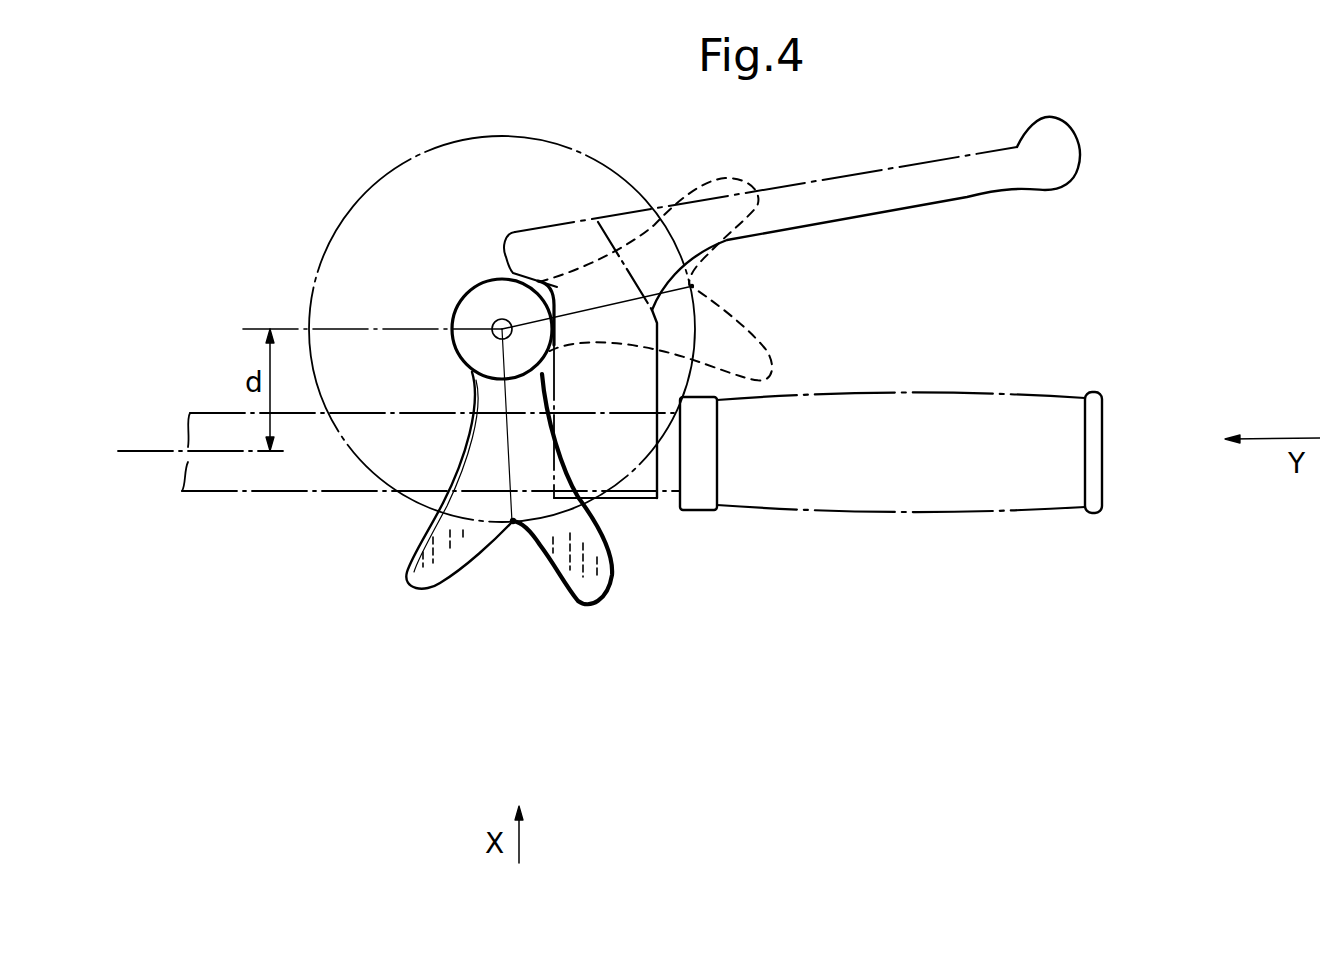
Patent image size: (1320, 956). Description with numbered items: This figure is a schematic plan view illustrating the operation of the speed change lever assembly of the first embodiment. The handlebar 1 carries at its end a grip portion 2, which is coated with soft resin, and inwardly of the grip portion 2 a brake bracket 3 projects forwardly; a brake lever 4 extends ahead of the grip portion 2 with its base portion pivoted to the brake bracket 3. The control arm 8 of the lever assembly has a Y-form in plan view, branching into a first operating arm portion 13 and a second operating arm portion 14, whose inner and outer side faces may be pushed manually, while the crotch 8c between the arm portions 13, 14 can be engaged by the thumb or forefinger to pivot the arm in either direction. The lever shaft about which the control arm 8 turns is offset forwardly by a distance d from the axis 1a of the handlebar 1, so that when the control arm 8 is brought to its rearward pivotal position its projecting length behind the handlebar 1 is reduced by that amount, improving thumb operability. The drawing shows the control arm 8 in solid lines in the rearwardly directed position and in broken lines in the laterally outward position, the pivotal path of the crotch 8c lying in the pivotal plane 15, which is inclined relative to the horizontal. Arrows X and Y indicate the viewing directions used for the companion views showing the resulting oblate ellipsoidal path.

The handlebar 1 is at (230, 495).
The axis of the handlebar 1a is at (143, 453).
The grip portion 2 is at (1033, 395).
The brake bracket 3 is at (560, 222).
The brake lever 4 is at (960, 153).
The control arm 8 is at (417, 587).
The crotch 8c is at (516, 526).
The first operating arm portion 13 is at (457, 590).
The second operating arm portion 14 is at (590, 605).
The pivotal plane 15 is at (457, 173).